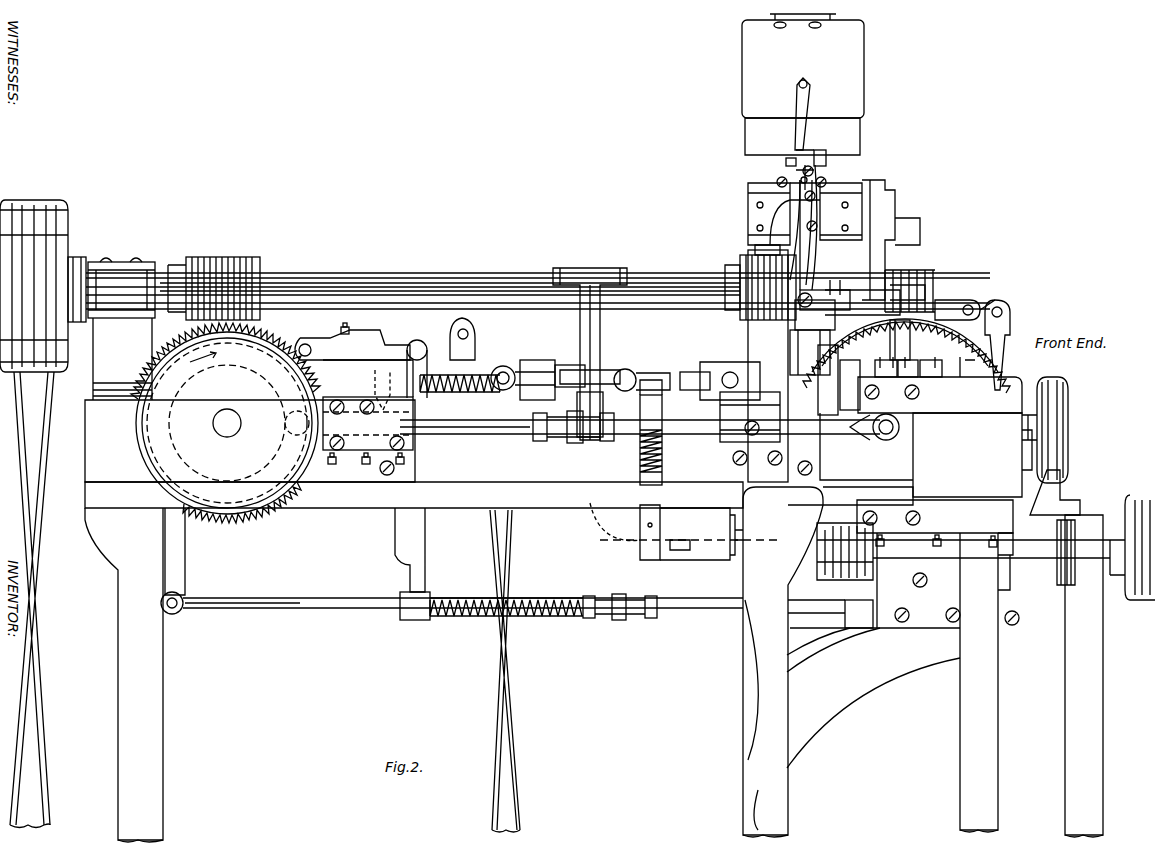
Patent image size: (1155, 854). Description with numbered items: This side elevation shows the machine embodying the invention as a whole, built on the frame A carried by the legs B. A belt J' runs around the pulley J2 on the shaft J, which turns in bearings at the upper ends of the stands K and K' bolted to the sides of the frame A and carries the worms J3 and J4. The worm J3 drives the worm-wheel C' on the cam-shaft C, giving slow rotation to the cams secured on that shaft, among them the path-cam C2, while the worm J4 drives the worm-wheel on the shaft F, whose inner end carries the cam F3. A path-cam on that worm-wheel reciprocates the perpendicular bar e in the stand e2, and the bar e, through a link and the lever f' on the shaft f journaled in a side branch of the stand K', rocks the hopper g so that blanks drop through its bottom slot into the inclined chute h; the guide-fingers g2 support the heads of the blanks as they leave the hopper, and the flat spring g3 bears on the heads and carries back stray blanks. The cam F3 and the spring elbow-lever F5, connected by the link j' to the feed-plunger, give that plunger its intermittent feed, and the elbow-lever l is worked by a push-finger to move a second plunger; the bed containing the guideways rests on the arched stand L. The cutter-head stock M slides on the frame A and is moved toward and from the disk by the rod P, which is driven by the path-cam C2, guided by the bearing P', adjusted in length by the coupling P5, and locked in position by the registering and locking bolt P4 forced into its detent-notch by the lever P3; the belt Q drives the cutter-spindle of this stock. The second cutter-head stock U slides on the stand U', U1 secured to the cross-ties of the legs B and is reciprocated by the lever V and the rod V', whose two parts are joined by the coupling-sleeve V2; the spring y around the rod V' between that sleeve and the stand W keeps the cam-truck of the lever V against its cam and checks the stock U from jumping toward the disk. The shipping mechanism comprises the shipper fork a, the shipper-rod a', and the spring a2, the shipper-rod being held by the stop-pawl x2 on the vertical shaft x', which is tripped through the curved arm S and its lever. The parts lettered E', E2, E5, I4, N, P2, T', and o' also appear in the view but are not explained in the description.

The frame A is at (558, 454).
The legs B is at (454, 664).
The belt Q is at (979, 682).
The stand K is at (121, 329).
The stand K' is at (757, 241).
The shaft J is at (538, 283).
The belt J' is at (34, 514).
The pulley J2 is at (76, 257).
The worm J3 is at (214, 278).
The worm J4 is at (915, 283).
The worm-wheel C' is at (225, 416).
The path-cam C2 is at (228, 423).
The cam-shaft C is at (227, 423).
The lever V is at (173, 561).
The rod V' is at (528, 602).
The coupling-sleeve V2 is at (625, 600).
The stand W is at (412, 564).
The spring y is at (506, 616).
The belt I4 is at (505, 671).
The cutter-head stock U is at (904, 564).
The stand U' is at (950, 619).
The stand U1 is at (1014, 543).
The bearing P' is at (368, 417).
The carriage slide P2 is at (766, 433).
The lever P3 is at (352, 341).
The registering and locking bolt P4 is at (404, 369).
The coupling P5 is at (583, 440).
The rod P is at (649, 436).
The lug E5 is at (460, 355).
The arm E2 is at (705, 362).
The standard E' is at (760, 366).
The shipper fork a is at (590, 354).
The shipper-rod a' is at (552, 368).
The spring a2 is at (500, 366).
The vertical shaft x' is at (650, 432).
The stop-pawl x2 is at (662, 380).
The curved arm S is at (685, 522).
The slide T' is at (691, 532).
The arched stand L is at (812, 337).
The slide N is at (832, 380).
The elbow-lever l is at (860, 266).
The link j' is at (967, 301).
The elbow-lever F5 is at (999, 345).
The shaft F is at (906, 356).
The cam F3 is at (925, 360).
The cutter-head stock M is at (940, 395).
The pulley o' is at (1052, 430).
The hopper g is at (803, 84).
The guide-fingers g2 is at (786, 162).
The flat spring g3 is at (818, 160).
The shaft f is at (760, 211).
The lever f' is at (833, 208).
The perpendicular bar e is at (891, 240).
The stand e2 is at (905, 340).
The inclined chute h is at (801, 231).